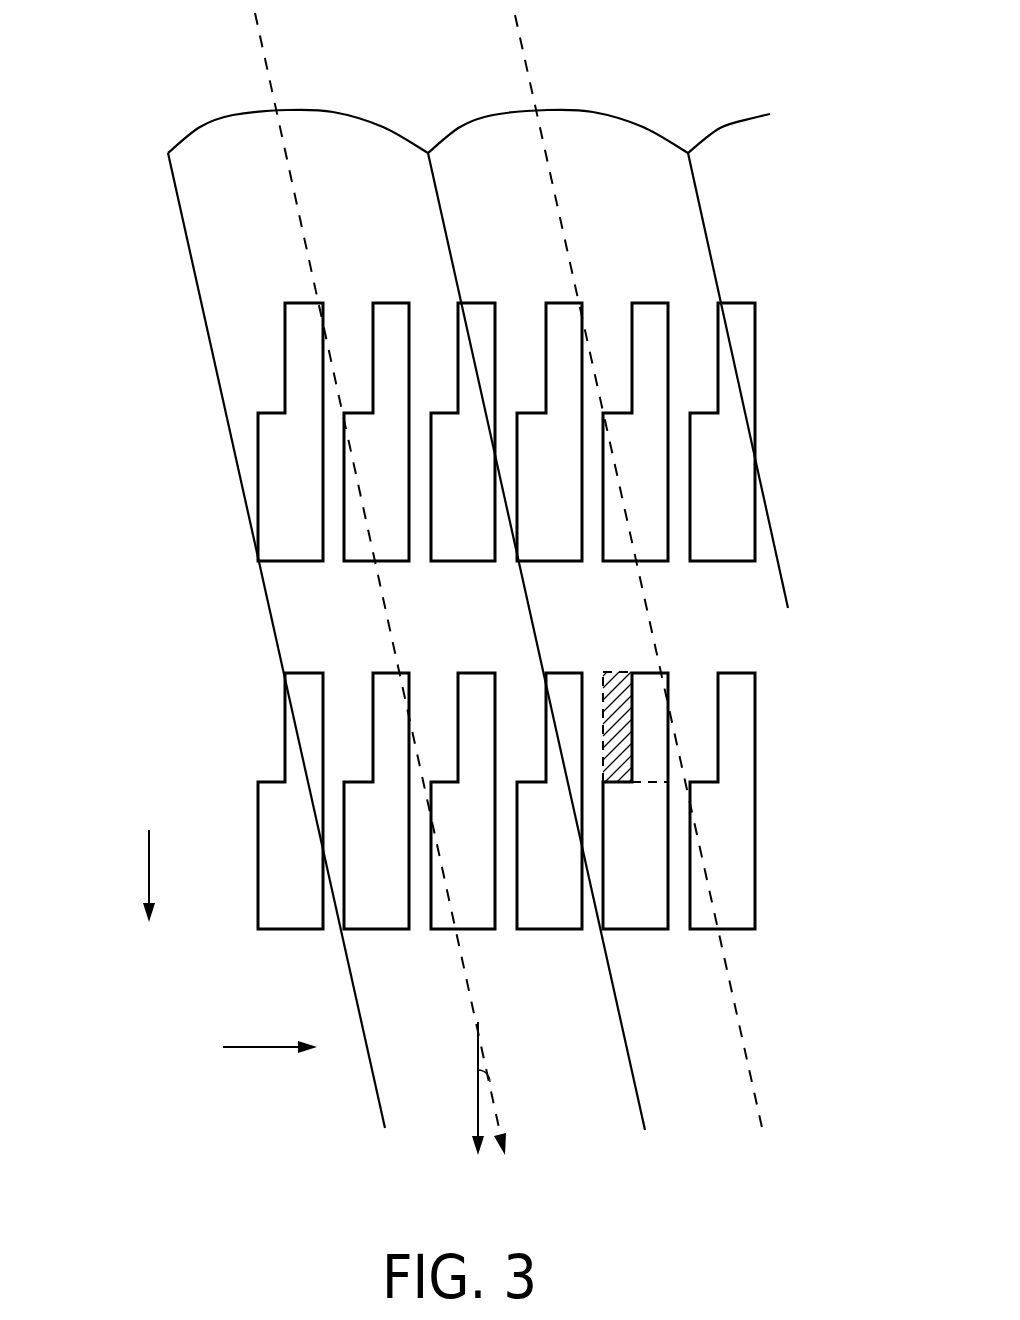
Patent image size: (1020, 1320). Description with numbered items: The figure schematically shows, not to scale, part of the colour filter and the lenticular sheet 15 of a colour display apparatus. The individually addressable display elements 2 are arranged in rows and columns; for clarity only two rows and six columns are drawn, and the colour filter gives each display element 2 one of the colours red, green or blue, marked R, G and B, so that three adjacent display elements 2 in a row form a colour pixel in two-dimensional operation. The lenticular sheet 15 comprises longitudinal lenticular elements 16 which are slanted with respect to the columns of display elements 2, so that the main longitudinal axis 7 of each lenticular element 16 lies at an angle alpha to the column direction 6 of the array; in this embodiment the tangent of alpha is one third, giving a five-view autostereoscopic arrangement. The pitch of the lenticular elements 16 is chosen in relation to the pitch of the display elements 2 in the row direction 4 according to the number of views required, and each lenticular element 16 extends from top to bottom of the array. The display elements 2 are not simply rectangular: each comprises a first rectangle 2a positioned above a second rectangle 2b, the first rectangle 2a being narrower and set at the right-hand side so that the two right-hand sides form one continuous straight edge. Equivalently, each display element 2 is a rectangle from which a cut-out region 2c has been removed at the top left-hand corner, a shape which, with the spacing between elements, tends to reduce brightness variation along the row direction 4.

The individually addressable display element 2 is at (471, 644).
The first rectangle 2a is at (648, 692).
The second rectangle 2b is at (650, 930).
The cut-out region 2c is at (613, 672).
The row direction 4 is at (261, 1050).
The column direction 6 is at (148, 868).
The main longitudinal axis 7 is at (261, 39).
The lenticular sheet 15 is at (502, 594).
The lenticular element 16 is at (478, 128).